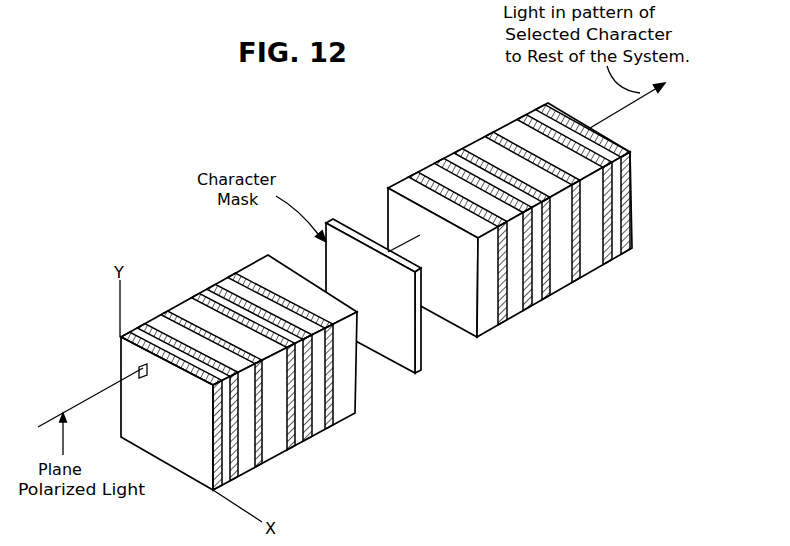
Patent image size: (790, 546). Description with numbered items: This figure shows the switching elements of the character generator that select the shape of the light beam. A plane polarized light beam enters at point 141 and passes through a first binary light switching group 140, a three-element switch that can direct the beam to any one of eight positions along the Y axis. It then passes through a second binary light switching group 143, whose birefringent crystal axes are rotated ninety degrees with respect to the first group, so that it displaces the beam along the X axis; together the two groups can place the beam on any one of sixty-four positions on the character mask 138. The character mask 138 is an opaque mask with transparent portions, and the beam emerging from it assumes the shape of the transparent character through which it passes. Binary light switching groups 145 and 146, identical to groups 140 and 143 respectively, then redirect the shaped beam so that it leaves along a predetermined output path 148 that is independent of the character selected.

The character mask 138 is at (347, 226).
The first binary light switching group 140 is at (219, 497).
The light beam entry point 141 is at (84, 400).
The second binary light switching group 143 is at (292, 456).
The third binary light switching group 145 is at (477, 344).
The fourth binary light switching group 146 is at (556, 300).
The output path 148 is at (621, 107).